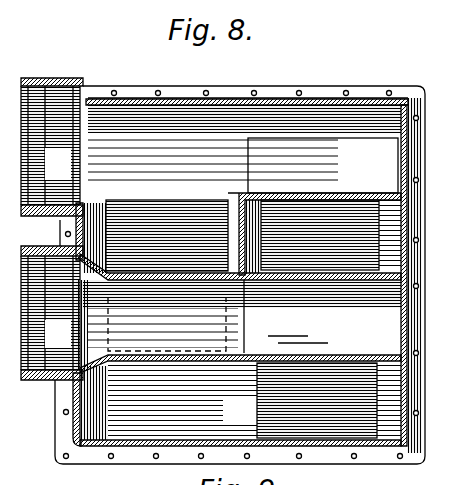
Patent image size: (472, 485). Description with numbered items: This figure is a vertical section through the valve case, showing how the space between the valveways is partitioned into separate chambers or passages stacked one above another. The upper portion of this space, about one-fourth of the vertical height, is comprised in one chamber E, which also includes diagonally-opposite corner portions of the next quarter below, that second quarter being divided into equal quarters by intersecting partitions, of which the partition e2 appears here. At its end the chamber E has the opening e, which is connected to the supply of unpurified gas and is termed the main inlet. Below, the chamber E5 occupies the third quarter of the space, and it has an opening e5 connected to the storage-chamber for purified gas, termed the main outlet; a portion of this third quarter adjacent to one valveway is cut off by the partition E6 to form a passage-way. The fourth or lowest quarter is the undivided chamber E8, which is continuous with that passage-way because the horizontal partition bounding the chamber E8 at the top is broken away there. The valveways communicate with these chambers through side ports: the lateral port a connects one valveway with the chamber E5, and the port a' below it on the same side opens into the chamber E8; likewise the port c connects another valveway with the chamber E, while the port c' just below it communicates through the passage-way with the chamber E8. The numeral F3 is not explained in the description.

The upper chamber E is at (97, 193).
The main inlet opening e is at (41, 148).
The main outlet opening e5 is at (52, 313).
The port of valveway C c is at (167, 210).
The partition e2 is at (233, 188).
The lateral port of valveway A a is at (331, 209).
The upper compartment F3 is at (379, 213).
The partition E6 is at (242, 316).
The chamber E5 is at (240, 336).
The port of valveway C c' is at (168, 424).
The lowest chamber E8 is at (243, 411).
The lower port of valveway A a' is at (329, 424).